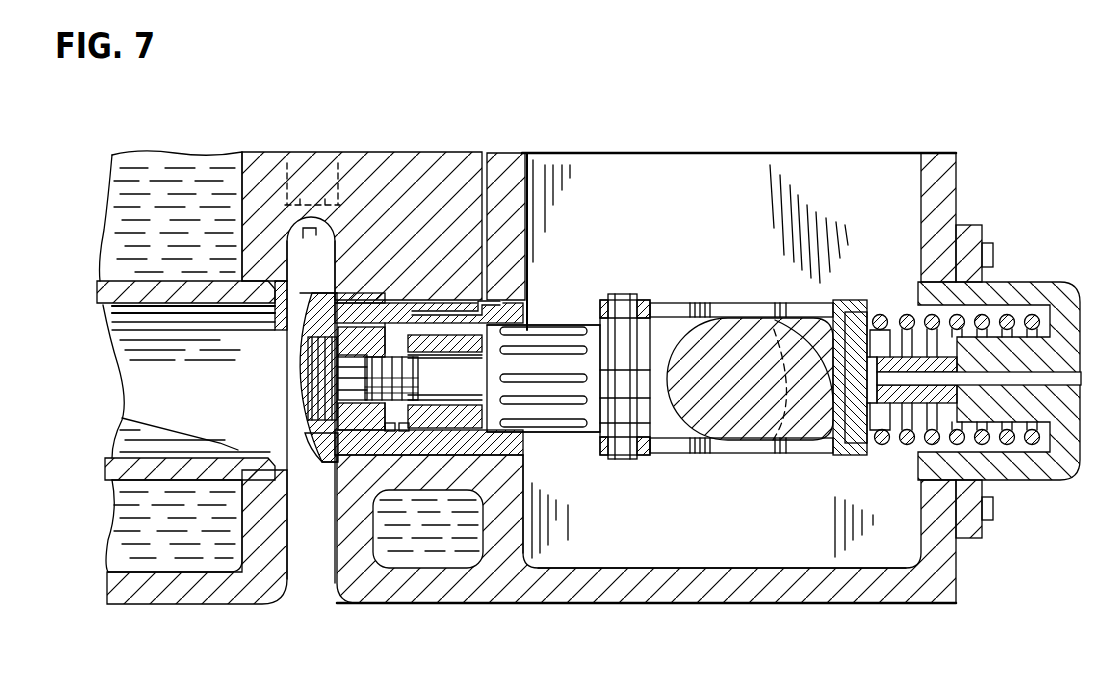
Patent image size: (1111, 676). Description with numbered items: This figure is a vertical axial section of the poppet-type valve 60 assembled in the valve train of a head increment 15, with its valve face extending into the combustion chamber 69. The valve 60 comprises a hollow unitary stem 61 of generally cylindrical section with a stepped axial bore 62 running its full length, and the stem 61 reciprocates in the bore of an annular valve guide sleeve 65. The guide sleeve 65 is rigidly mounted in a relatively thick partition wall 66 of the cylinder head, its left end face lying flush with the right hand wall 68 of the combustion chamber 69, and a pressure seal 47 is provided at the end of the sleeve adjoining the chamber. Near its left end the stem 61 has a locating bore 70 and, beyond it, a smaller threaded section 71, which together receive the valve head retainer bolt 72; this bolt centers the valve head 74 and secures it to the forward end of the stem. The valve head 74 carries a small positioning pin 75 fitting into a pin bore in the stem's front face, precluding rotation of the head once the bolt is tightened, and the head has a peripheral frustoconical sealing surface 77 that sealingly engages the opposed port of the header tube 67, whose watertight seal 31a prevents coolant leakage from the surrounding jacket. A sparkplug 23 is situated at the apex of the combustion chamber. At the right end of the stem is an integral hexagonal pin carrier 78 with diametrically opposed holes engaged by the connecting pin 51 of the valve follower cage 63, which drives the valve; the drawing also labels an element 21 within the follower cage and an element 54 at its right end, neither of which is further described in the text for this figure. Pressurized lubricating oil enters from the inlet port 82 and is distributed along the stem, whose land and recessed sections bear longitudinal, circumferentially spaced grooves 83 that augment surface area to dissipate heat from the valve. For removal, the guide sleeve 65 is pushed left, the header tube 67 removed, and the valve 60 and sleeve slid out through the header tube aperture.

The head increment 15 is at (968, 181).
The ball valve element 21 is at (773, 440).
The sparkplug 23 is at (320, 176).
The watertight seal 31a is at (122, 418).
The pressure seal 47 is at (340, 510).
The connecting pin 51 is at (622, 462).
The end plate 54 is at (838, 458).
The valve 60 is at (553, 308).
The hollow unitary stem 61 is at (578, 306).
The stepped axial bore 62 is at (448, 442).
The valve follower cage 63 is at (722, 298).
The annular valve guide sleeve 65 is at (527, 457).
The partition wall 66 is at (510, 528).
The header tube 67 is at (120, 281).
The right hand wall 68 is at (330, 555).
The combustion chamber 69 is at (302, 578).
The locating bore 70 is at (378, 300).
The threaded section 71 is at (383, 432).
The valve head retainer bolt 72 is at (320, 362).
The valve head 74 is at (320, 440).
The positioning pin 75 is at (282, 308).
The frustoconical sealing surface 77 is at (302, 462).
The pin carrier 78 is at (645, 418).
The inlet port 82 is at (535, 308).
The longitudinal grooves 83 is at (548, 405).